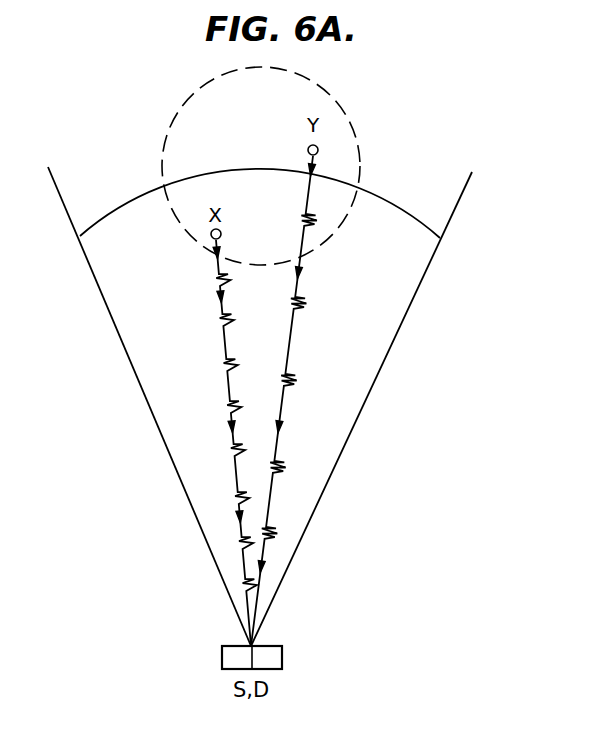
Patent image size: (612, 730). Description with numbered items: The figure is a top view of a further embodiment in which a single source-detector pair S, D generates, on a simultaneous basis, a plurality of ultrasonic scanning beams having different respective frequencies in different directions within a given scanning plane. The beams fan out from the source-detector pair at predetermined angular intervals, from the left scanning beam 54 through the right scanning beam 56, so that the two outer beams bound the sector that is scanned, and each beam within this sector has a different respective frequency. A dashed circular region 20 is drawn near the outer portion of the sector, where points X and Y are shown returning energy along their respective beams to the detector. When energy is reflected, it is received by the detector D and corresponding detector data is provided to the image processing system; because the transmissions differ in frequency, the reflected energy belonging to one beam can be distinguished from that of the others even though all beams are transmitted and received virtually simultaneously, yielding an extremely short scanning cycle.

The region of interest / target area 20 is at (335, 98).
The left scanning beam 54 is at (143, 392).
The right scanning beam 56 is at (363, 410).